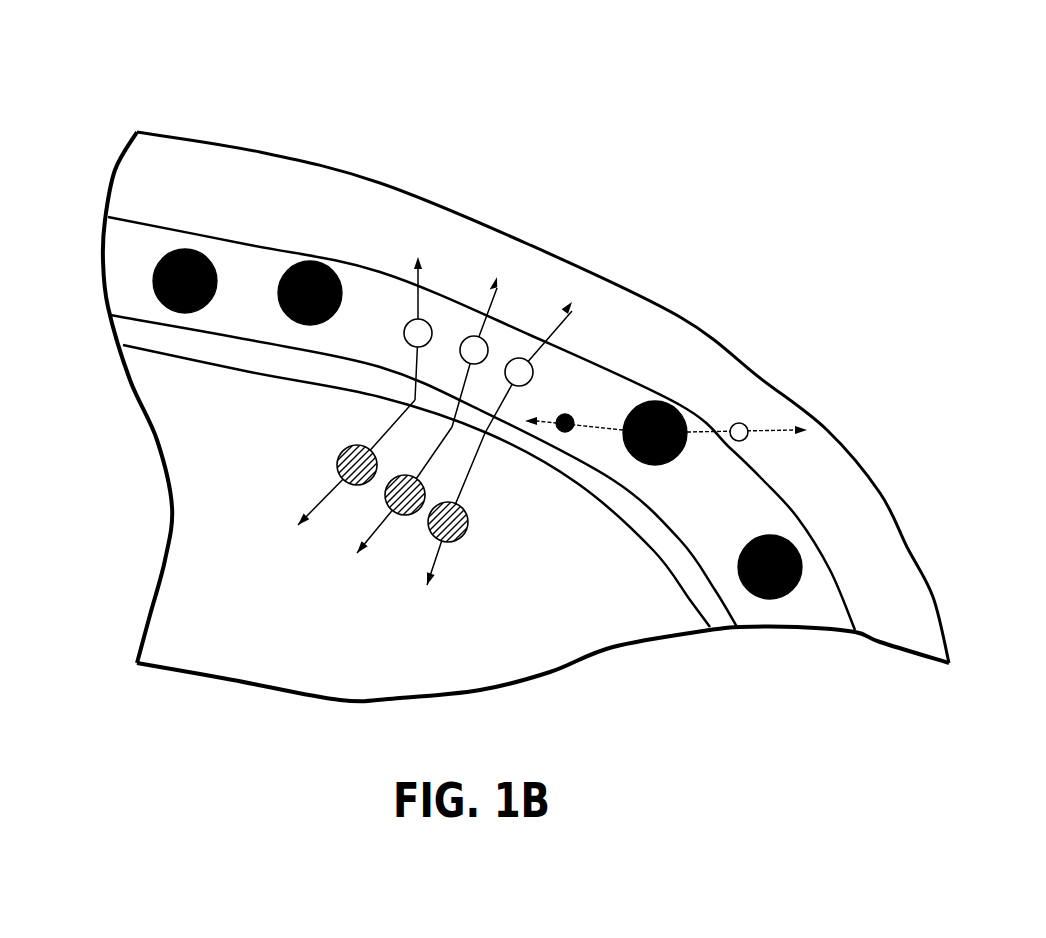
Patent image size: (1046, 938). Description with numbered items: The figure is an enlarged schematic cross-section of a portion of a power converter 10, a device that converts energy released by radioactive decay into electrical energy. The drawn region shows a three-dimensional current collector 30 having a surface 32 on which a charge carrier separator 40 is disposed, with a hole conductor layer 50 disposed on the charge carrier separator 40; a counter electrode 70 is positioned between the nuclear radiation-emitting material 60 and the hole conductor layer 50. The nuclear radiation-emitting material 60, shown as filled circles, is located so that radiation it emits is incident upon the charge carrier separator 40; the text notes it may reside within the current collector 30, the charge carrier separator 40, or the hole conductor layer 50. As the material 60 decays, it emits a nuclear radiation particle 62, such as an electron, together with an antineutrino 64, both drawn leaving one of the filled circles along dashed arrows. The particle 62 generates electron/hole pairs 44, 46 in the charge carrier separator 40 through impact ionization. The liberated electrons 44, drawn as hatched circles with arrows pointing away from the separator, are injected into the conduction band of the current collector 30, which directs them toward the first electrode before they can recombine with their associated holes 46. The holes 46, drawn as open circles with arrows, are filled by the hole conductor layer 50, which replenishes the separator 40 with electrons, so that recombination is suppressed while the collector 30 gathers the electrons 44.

The power converter 10 is at (605, 78).
The three-dimensional current collector 30 is at (208, 677).
The surface 32 is at (590, 485).
The charge carrier separator 40 is at (727, 630).
The liberated electrons 44 is at (448, 542).
The holes 46 is at (523, 360).
The hole conductor layer 50 is at (105, 302).
The nuclear radiation-emitting material 60 is at (318, 267).
The nuclear radiation particle 62 is at (565, 413).
The antineutrino 64 is at (740, 422).
The counter electrode 70 is at (890, 647).